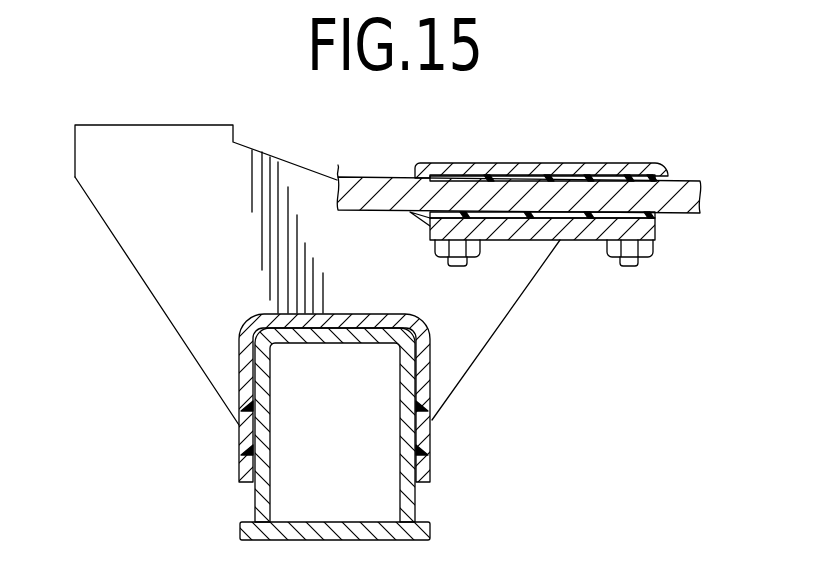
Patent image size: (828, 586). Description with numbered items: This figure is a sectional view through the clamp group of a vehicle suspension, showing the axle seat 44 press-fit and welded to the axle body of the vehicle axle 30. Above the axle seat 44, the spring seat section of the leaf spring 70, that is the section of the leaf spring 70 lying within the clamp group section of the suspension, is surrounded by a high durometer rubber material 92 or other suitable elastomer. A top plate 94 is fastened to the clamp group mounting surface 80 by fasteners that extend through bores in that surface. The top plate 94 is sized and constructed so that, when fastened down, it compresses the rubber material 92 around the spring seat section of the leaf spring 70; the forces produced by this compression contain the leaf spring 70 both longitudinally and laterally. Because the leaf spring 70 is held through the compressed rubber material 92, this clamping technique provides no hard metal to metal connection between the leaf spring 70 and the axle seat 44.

The vehicle axle 30 is at (265, 500).
The axle seat 44 is at (173, 245).
The leaf spring 70 is at (660, 197).
The clamp group mounting surface 80 is at (582, 242).
The high durometer rubber material 92 is at (587, 178).
The top plate 94 is at (525, 167).